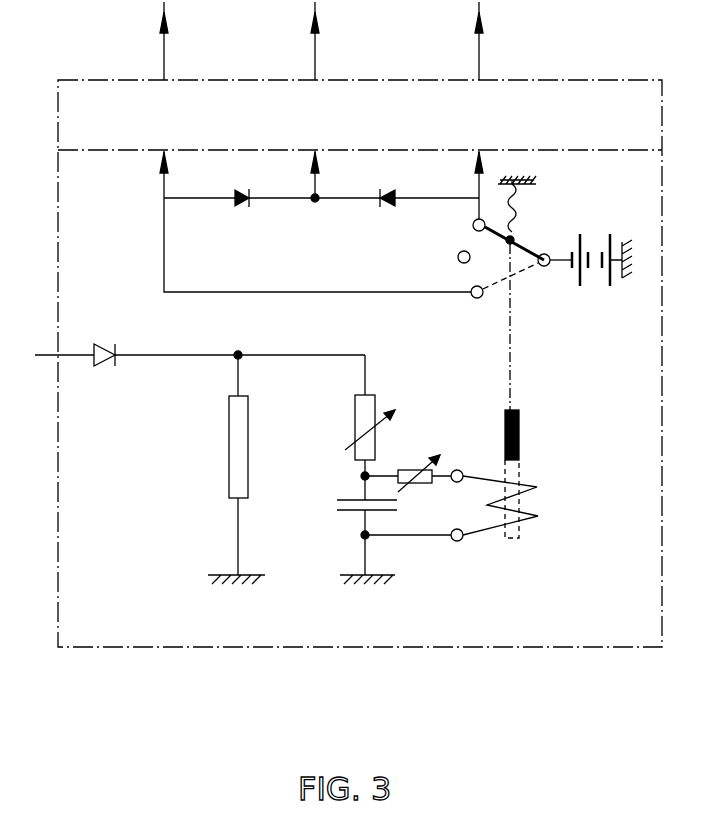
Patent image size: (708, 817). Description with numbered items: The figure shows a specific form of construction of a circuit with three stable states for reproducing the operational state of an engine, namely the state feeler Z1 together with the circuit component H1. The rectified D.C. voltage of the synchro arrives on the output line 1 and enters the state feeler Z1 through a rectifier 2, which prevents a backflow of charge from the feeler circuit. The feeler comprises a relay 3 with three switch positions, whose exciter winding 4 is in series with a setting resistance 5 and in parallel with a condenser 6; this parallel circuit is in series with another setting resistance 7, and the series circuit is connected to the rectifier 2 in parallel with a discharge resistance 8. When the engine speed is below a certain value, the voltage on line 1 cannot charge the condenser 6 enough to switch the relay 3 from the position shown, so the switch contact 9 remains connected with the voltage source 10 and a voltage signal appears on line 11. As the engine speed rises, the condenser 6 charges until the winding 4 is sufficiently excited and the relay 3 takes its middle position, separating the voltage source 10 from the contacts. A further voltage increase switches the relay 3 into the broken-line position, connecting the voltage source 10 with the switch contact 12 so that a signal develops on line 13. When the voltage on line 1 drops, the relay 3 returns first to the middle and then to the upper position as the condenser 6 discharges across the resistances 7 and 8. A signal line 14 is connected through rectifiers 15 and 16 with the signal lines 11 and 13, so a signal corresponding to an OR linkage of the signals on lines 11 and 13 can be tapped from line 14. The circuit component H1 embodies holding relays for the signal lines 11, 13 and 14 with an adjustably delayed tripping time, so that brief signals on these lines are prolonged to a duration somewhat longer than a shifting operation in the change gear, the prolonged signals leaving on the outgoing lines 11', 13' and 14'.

The output line 1 is at (42, 355).
The rectifier 2 is at (110, 366).
The relay 3 is at (564, 372).
The exciter winding 4 is at (513, 538).
The setting resistance 5 is at (408, 470).
The condenser 6 is at (340, 508).
The setting resistance 7 is at (372, 405).
The discharge resistance 8 is at (232, 470).
The switch contact 9 is at (473, 225).
The voltage source 10 is at (585, 240).
The line 11 is at (529, 111).
The output terminal 11' is at (506, 41).
The switch contact 12 is at (473, 298).
The line 13 is at (125, 111).
The output terminal 13' is at (193, 41).
The signal line 14 is at (359, 113).
The output terminal 14' is at (337, 41).
The rectifier 15 is at (384, 208).
The rectifier 16 is at (245, 208).
The circuit component H1 is at (317, 125).
The state feeler Z1 is at (483, 648).